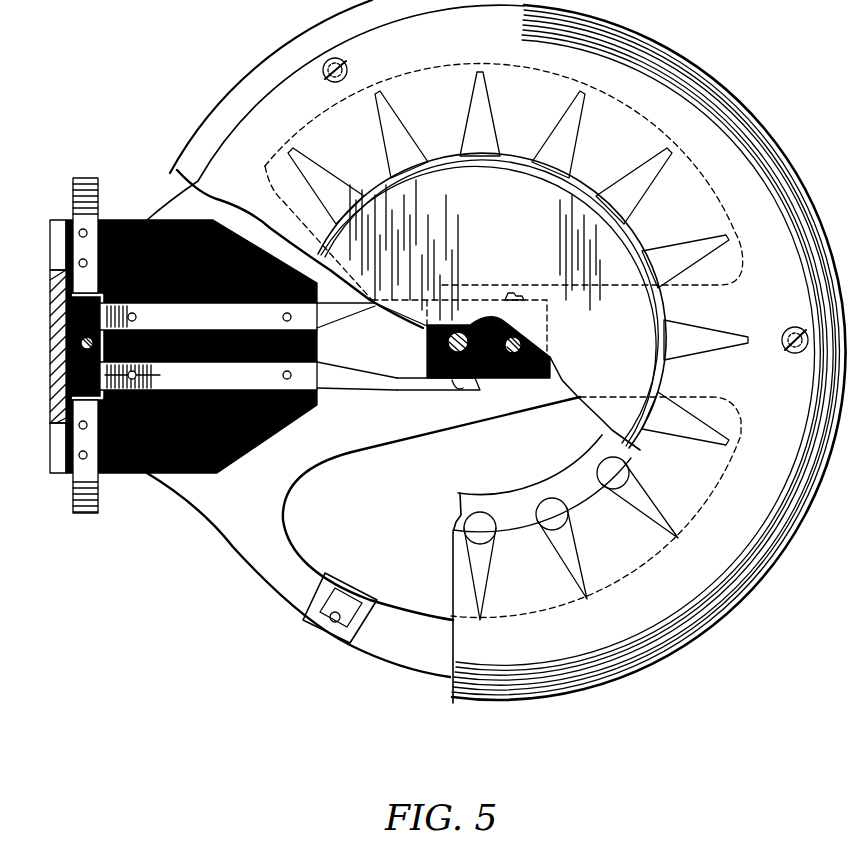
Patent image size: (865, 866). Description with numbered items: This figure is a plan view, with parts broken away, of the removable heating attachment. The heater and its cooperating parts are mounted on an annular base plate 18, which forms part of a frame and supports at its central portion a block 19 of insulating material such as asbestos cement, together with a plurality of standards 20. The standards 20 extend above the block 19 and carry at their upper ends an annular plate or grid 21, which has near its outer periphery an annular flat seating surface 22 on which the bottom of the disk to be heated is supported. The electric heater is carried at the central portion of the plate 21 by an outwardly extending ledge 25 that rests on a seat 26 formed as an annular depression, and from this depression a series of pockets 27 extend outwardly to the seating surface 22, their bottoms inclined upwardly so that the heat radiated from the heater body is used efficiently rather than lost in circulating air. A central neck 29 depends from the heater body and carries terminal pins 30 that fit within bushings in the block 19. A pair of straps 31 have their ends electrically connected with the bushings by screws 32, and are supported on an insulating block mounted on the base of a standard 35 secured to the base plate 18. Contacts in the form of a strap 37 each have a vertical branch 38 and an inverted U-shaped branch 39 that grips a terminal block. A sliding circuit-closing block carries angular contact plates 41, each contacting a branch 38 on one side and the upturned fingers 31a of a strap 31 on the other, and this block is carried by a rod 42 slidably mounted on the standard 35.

The annular base plate 18 is at (293, 557).
The block of insulating material 19 is at (495, 382).
The standards 20 is at (352, 594).
The annular plate or grid 21 is at (552, 690).
The annular flat seating surface 22 is at (472, 598).
The outwardly extending ledge 25 is at (492, 300).
The seat 26 is at (542, 483).
The pockets 27 is at (693, 417).
The central neck 29 is at (427, 350).
The terminal pins 30 is at (512, 343).
The straps 31 is at (263, 346).
The upturned fingers 31a is at (148, 376).
The screws 32 is at (515, 297).
The standard 35 is at (52, 333).
The strap 37 is at (88, 240).
The vertical branch 38 is at (64, 425).
The inverted U-shaped branch 39 is at (80, 492).
The angular contact plates 41 is at (144, 318).
The rod 42 is at (58, 364).